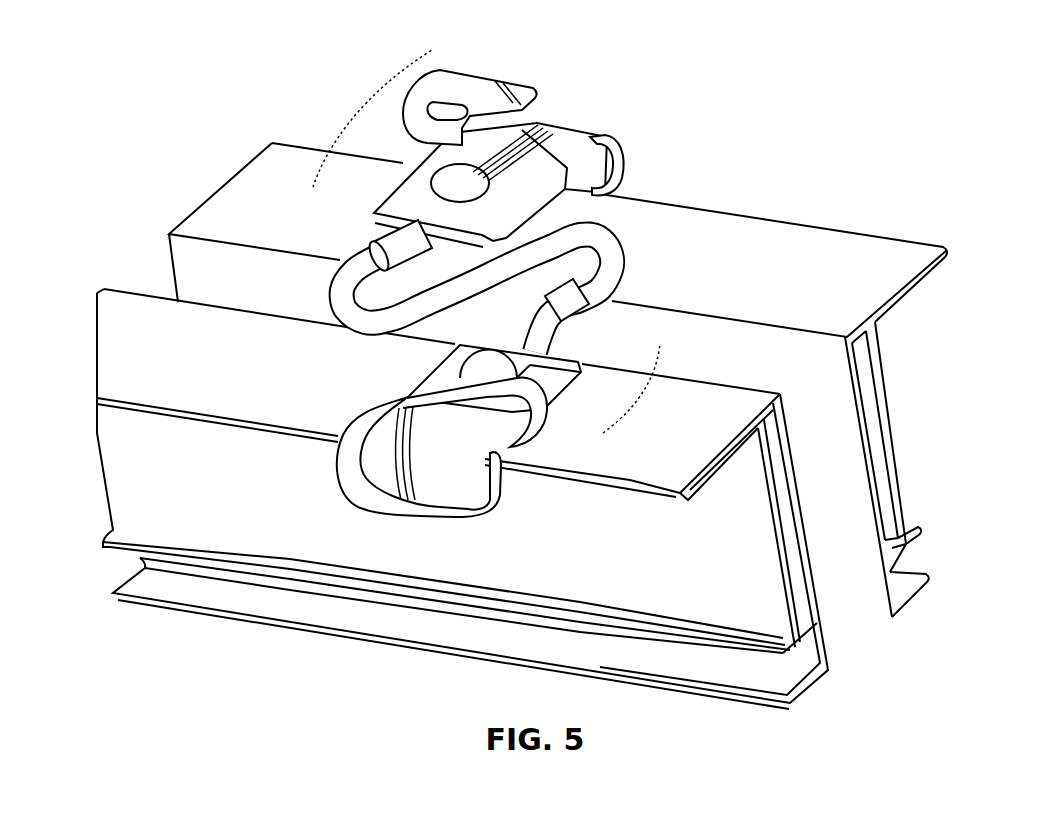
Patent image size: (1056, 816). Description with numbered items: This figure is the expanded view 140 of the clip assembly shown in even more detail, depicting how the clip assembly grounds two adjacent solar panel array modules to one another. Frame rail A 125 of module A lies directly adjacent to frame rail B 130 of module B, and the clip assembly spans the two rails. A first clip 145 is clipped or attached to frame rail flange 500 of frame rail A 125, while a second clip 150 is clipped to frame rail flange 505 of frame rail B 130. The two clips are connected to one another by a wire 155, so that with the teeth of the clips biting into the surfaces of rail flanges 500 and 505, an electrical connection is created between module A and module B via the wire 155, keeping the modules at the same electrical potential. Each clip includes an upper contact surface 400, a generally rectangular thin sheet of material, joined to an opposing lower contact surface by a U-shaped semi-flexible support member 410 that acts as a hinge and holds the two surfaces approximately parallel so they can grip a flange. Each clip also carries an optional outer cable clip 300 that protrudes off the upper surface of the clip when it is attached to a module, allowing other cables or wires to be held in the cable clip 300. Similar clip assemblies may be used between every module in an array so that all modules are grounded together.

The frame rail A 125 is at (925, 390).
The frame rail B 130 is at (850, 633).
The expanded view 140 is at (955, 101).
The clip 145 is at (338, 100).
The clip 150 is at (625, 450).
The wire 155 is at (322, 279).
The outer cable clip 300 is at (498, 65).
The upper contact surface 400 is at (534, 158).
The U-shaped semi-flexible support member 410 is at (590, 111).
The frame rail flange 500 is at (947, 272).
The frame rail flange 505 is at (717, 460).